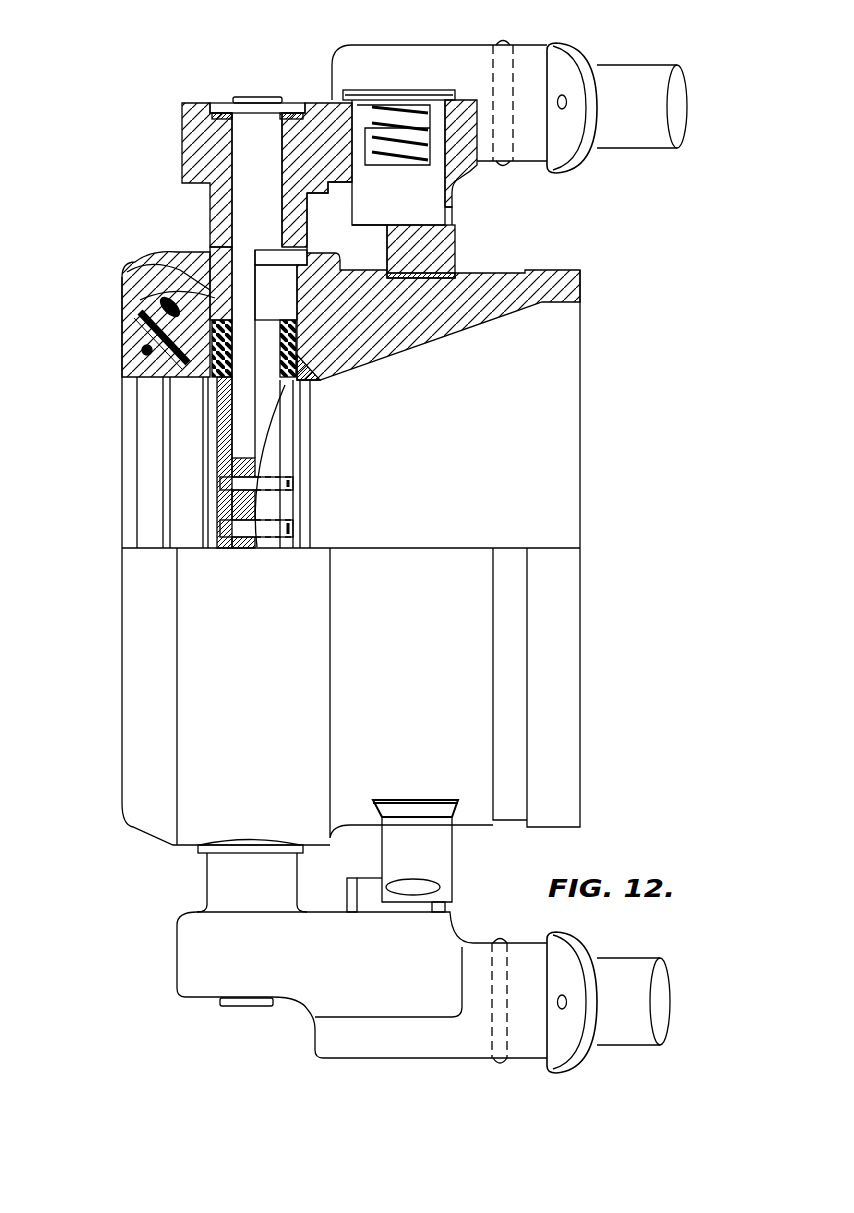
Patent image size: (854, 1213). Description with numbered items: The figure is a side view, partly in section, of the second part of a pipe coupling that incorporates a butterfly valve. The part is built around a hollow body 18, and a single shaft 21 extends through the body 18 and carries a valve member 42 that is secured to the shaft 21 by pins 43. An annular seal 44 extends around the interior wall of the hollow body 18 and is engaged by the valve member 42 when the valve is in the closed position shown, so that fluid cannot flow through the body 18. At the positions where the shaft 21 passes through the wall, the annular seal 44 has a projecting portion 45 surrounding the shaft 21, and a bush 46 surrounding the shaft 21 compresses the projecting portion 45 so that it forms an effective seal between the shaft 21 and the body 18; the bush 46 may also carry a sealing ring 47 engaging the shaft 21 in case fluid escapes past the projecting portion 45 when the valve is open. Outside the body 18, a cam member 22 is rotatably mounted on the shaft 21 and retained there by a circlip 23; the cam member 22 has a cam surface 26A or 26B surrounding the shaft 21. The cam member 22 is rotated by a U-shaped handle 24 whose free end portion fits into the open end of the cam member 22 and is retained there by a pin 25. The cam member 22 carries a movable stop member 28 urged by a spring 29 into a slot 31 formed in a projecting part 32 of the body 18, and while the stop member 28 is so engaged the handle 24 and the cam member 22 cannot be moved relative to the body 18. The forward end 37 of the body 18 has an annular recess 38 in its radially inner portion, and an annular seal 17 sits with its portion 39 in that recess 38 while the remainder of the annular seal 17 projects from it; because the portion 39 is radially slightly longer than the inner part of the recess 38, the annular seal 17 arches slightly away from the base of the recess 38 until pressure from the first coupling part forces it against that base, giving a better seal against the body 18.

The annular seal 17 is at (145, 332).
The hollow body 18 is at (400, 330).
The shaft 21 is at (276, 104).
The cam member 22 is at (318, 120).
The circlip 23 is at (244, 110).
The handle 24 is at (636, 78).
The pin 25 is at (503, 44).
The cam surface 26A is at (210, 224).
The cam surface 26B is at (210, 892).
The movable stop member 28 is at (373, 213).
The spring 29 is at (402, 128).
The slot 31 is at (452, 212).
The projecting part 32 is at (445, 250).
The forward end 37 is at (170, 266).
The annular recess 38 is at (165, 362).
The portion of the seal 39 is at (160, 342).
The valve member 42 is at (275, 455).
The pins 43 is at (222, 526).
The annular seal 44 is at (300, 420).
The projecting portion 45 is at (316, 376).
The bush 46 is at (300, 300).
The sealing ring 47 is at (160, 301).